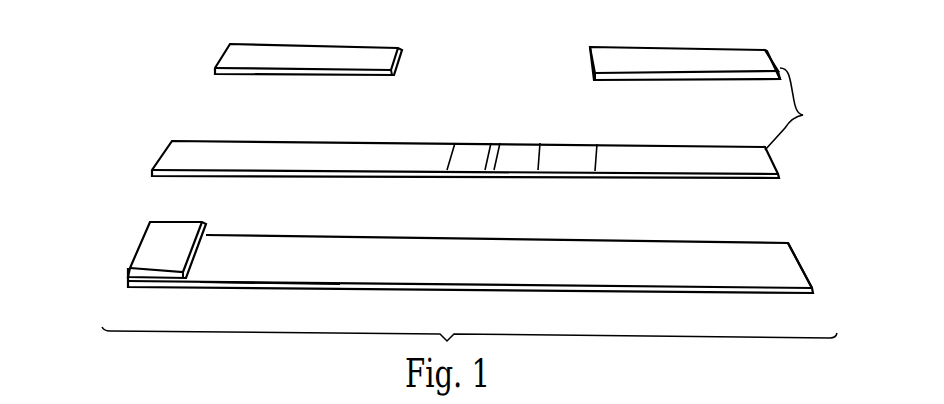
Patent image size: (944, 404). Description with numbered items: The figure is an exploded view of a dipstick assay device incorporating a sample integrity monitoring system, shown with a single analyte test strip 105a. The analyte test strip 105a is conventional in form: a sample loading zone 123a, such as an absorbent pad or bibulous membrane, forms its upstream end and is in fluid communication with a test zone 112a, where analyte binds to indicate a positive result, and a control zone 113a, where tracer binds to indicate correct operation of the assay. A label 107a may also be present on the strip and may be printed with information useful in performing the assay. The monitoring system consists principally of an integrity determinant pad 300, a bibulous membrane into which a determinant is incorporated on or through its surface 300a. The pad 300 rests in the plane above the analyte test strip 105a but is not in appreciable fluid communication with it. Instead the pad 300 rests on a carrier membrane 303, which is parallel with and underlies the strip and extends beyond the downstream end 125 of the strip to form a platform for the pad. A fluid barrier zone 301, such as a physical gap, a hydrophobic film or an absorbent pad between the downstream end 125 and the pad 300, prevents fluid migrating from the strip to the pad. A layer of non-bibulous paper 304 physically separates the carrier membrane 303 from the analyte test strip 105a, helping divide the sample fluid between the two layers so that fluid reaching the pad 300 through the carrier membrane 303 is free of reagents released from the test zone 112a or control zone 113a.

The label 107a is at (308, 37).
The sample loading zone 123a is at (685, 40).
The analyte test strip 105a is at (806, 109).
The test zone 112a is at (476, 118).
The control zone 113a is at (541, 118).
The downstream end 125 is at (496, 160).
The integrity determinant pad 300 is at (124, 241).
The surface 300a is at (121, 257).
The fluid barrier zone 301 is at (470, 242).
The carrier membrane 303 is at (270, 308).
The non-bibulous paper 304 is at (810, 254).